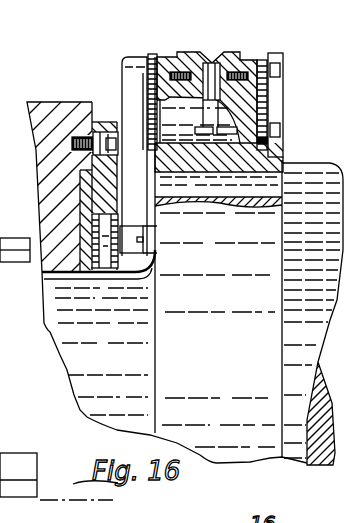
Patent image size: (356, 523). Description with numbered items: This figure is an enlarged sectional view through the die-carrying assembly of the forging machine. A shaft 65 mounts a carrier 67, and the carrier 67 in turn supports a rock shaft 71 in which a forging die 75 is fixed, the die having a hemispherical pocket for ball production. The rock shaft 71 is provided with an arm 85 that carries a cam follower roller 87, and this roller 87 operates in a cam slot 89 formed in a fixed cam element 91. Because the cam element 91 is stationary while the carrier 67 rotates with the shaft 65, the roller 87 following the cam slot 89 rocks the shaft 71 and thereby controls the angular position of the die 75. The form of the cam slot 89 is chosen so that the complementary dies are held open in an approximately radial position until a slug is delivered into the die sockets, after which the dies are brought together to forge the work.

The shaft 65 is at (308, 167).
The carrier 67 is at (283, 157).
The rock shaft 71 is at (250, 60).
The forging die 75 is at (228, 60).
The arm 85 is at (122, 97).
The cam follower roller 87 is at (152, 260).
The cam slot 89 is at (92, 217).
The fixed cam element 91 is at (85, 180).